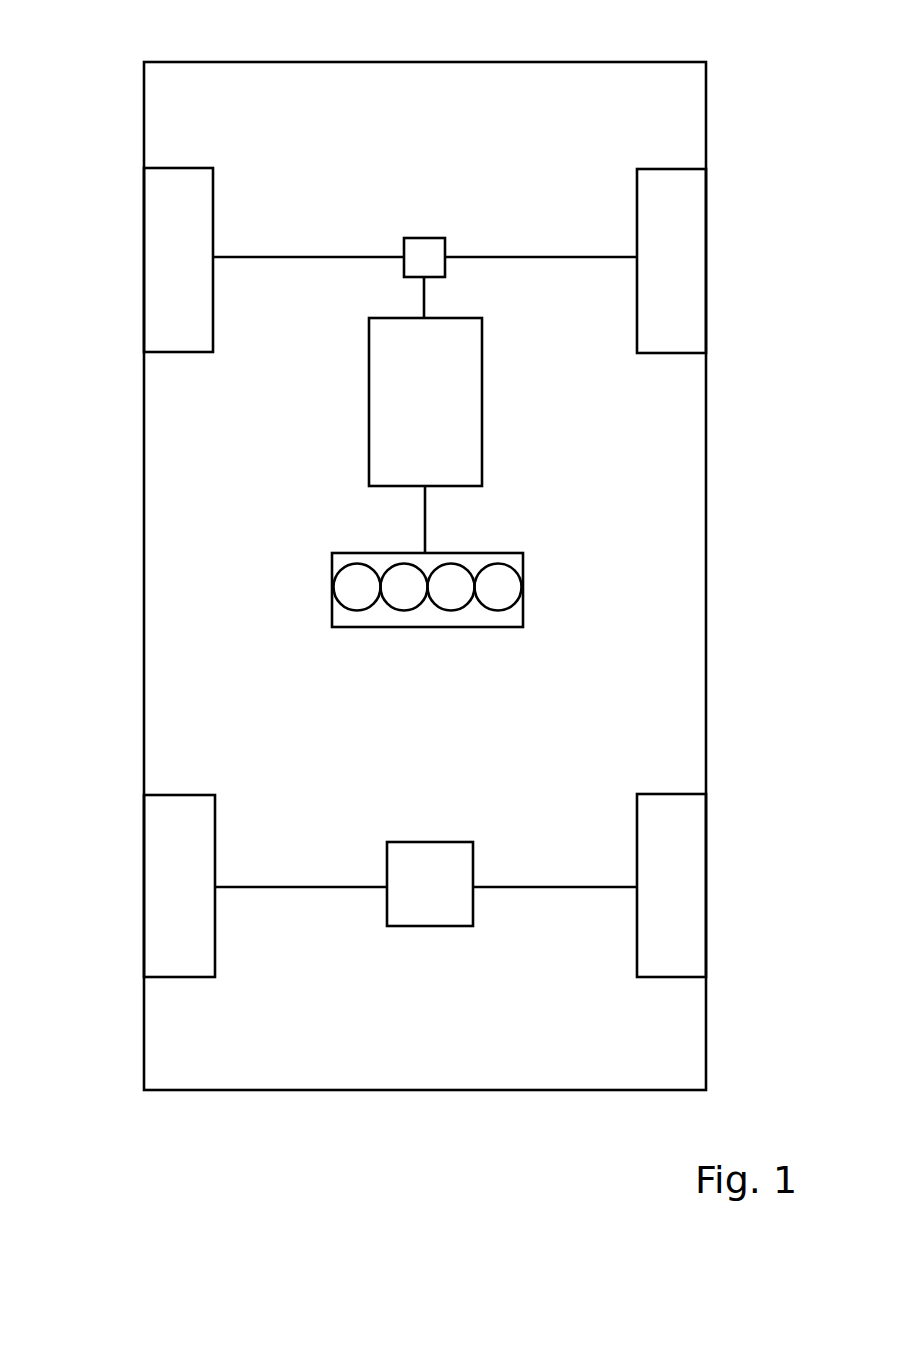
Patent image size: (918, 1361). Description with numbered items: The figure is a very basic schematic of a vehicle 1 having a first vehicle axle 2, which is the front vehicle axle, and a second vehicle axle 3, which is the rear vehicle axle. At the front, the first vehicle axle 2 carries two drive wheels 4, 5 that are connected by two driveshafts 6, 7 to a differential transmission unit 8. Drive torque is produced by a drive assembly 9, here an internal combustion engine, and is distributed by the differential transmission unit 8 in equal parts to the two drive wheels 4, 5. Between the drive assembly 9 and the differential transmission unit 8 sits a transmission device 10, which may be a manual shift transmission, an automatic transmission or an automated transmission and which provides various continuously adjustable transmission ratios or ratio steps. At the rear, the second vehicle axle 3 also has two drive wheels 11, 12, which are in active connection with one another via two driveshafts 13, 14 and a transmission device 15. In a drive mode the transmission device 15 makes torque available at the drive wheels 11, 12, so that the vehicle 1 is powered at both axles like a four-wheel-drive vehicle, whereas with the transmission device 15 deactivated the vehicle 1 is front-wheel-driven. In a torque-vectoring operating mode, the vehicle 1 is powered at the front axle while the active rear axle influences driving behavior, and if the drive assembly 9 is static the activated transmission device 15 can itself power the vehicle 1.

The vehicle 1 is at (91, 458).
The first vehicle axle 2 is at (303, 250).
The second vehicle axle 3 is at (317, 895).
The drive wheel 4 is at (170, 230).
The drive wheel 5 is at (688, 231).
The driveshaft 6 is at (284, 258).
The driveshaft 7 is at (535, 258).
The differential transmission unit 8 is at (423, 258).
The drive assembly 9 is at (388, 615).
The transmission device 10 is at (391, 425).
The drive wheel 11 is at (172, 872).
The drive wheel 12 is at (688, 873).
The driveshaft 13 is at (293, 886).
The driveshaft 14 is at (541, 886).
The transmission device 15 is at (432, 930).